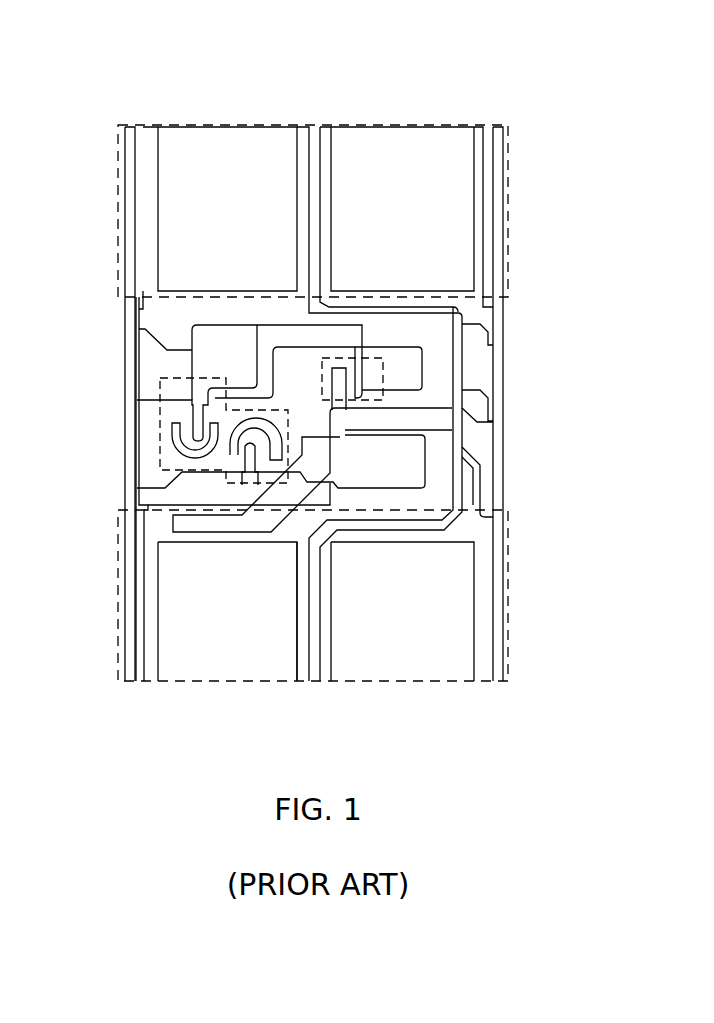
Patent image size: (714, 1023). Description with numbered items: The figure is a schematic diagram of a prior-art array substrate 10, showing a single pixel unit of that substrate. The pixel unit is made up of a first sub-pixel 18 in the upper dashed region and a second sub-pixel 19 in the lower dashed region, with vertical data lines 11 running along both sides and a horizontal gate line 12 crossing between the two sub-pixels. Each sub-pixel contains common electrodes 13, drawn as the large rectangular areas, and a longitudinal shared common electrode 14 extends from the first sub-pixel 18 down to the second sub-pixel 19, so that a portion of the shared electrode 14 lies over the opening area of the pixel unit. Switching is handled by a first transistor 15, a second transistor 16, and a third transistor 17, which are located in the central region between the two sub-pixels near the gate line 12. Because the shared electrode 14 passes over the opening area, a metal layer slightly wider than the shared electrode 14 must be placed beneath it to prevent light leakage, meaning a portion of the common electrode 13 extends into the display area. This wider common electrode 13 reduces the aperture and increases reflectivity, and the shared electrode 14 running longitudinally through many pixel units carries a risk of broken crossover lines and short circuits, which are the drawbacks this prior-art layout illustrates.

The array substrate 10 is at (184, 58).
The data lines 11 is at (128, 183).
The gate line 12 is at (150, 412).
The common electrodes 13 is at (165, 133).
The common electrode 14 is at (320, 228).
The first transistor 15 is at (162, 468).
The second transistor 16 is at (237, 496).
The third transistor 17 is at (390, 378).
The first sub-pixel 18 is at (385, 126).
The second sub-pixel 19 is at (512, 592).